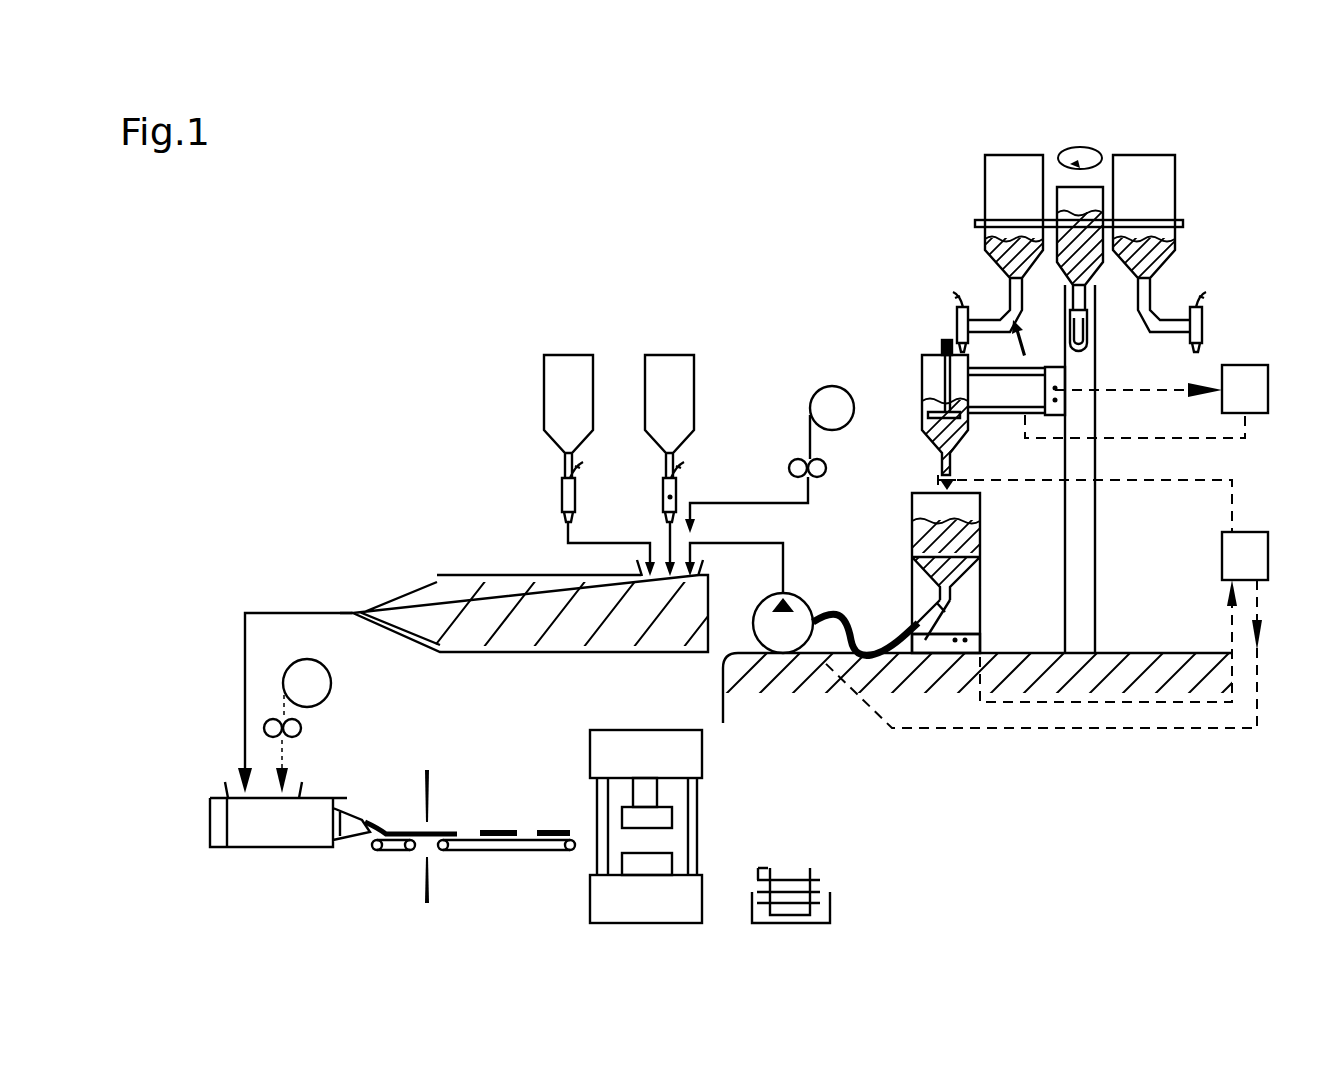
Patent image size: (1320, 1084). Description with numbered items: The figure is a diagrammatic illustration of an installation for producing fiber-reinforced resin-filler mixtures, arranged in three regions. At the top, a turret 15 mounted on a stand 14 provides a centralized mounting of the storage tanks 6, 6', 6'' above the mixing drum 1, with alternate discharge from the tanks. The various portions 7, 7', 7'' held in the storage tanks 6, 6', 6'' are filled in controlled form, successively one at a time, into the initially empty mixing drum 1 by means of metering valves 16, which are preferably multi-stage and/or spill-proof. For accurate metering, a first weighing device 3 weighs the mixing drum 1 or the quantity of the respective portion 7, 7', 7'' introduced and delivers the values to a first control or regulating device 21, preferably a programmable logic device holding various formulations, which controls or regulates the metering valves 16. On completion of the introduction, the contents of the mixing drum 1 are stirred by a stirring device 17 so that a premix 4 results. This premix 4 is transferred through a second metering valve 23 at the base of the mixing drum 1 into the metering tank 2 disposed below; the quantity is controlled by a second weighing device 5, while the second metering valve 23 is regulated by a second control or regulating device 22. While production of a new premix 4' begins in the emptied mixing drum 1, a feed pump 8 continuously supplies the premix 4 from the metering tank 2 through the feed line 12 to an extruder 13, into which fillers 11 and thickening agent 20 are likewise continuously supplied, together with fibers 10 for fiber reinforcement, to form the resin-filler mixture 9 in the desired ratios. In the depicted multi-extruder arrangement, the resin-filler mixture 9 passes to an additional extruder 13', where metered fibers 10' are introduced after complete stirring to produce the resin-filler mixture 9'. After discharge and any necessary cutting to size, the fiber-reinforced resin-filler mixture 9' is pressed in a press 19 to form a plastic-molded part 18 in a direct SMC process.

The mixing drum 1 is at (999, 392).
The metering tank 2 is at (958, 561).
The first weighing device 3 is at (1057, 398).
The premix 4 is at (958, 550).
The new premix 4' is at (934, 407).
The second weighing device 5 is at (972, 640).
The storage tank 6 is at (968, 208).
The storage tank 6' is at (1080, 269).
The storage tank 6'' is at (1203, 243).
The portion 7 is at (985, 231).
The portion 7' is at (1092, 289).
The portion 7'' is at (1177, 260).
The feed pump 8 is at (783, 637).
The resin-filler mixture 9 is at (265, 680).
The resin-filler mixture 9' is at (460, 848).
The fibers 10 is at (769, 382).
The fibers 10' is at (247, 726).
The fillers 11 is at (568, 372).
The feed line 12 is at (743, 543).
The extruder 13 is at (540, 527).
The additional extruder 13' is at (289, 854).
The stand 14 is at (1093, 623).
The turret 15 is at (1200, 141).
The metering valves 16 is at (962, 322).
The stirring device 17 is at (947, 340).
The plastic-molded part 18 is at (810, 867).
The press 19 is at (607, 752).
The thickening agent 20 is at (670, 372).
The first control or regulating device 21 is at (1146, 401).
The second control or regulating device 22 is at (532, 497).
The second metering valve 23 is at (957, 481).